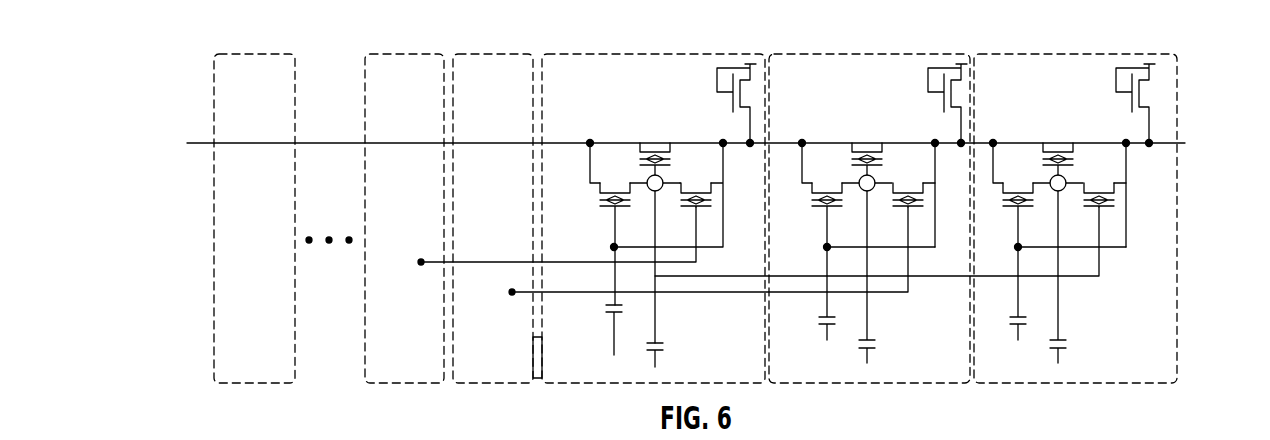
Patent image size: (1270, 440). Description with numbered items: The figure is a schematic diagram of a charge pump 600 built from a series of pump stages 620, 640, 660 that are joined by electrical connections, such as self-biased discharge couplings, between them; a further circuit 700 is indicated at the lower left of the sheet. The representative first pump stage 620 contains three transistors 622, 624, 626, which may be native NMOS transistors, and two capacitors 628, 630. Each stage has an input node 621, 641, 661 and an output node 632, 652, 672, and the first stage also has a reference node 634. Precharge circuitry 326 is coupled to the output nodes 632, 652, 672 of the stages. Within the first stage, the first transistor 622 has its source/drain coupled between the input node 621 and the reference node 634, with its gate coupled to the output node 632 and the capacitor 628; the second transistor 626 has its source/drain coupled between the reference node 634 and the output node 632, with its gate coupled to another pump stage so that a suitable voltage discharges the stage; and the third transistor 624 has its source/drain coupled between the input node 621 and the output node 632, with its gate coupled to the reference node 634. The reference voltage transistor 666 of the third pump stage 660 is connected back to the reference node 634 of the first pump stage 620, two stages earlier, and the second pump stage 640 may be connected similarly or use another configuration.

The charge pump 600 is at (176, 55).
The circuit (next figure) 700 is at (173, 439).
The precharge circuitry 326 is at (713, 83).
The pump stage 620 is at (600, 84).
The input node 621 is at (582, 146).
The first transistor 622 is at (607, 191).
The third transistor 624 is at (657, 150).
The second transistor 626 is at (691, 191).
The capacitor 628 is at (608, 307).
The capacitor 630 is at (663, 347).
The output node 632 is at (677, 180).
The reference node 634 is at (660, 190).
The pump stage 640 is at (838, 84).
The input node 641 is at (807, 146).
The output node 652 is at (933, 178).
The third pump stage 660 is at (1026, 84).
The input node 661 is at (998, 146).
The reference voltage transistor 666 is at (1096, 191).
The output node 672 is at (1122, 178).